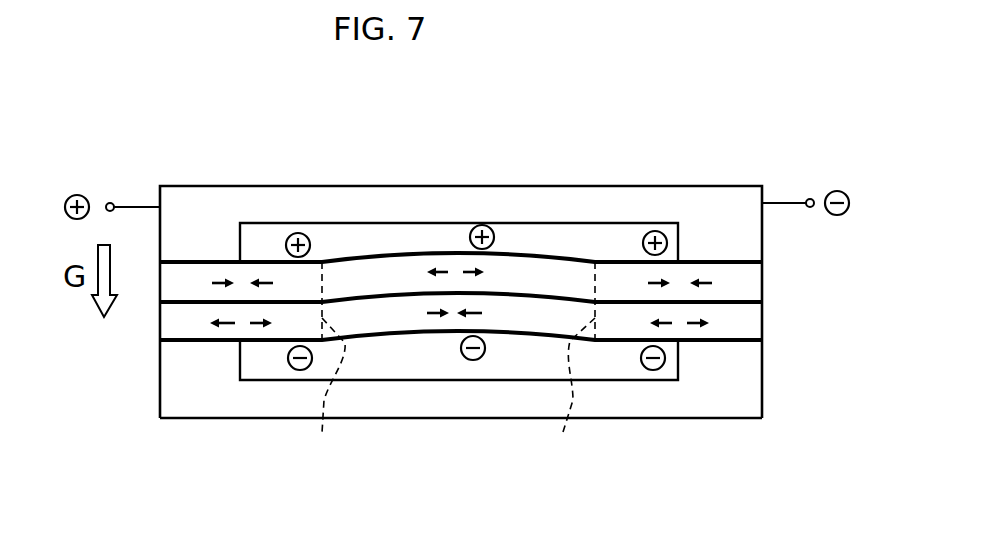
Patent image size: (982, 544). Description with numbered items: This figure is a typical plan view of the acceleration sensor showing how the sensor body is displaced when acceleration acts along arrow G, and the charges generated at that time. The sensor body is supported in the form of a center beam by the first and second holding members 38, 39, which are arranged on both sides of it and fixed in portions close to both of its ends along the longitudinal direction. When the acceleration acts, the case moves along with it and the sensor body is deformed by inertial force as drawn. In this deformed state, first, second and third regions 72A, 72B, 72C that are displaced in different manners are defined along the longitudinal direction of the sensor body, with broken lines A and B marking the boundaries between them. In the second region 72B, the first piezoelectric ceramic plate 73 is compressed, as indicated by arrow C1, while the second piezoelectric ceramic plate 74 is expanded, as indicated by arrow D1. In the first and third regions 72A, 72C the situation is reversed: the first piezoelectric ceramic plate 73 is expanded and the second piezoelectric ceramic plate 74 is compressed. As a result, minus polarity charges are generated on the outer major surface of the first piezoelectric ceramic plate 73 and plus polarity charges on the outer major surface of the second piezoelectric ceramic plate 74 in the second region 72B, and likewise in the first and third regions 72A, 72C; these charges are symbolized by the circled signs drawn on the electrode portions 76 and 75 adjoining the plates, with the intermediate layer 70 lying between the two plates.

The first holding member 38 is at (240, 185).
The second holding member 39 is at (495, 420).
The intermediate layer 70 is at (353, 298).
The second piezoelectric ceramic plate 74 is at (407, 270).
The first piezoelectric ceramic plate 73 is at (393, 320).
The upper electrode 76 is at (582, 258).
The lower electrode 75 is at (605, 342).
The first region 72A is at (287, 325).
The second region 72B is at (525, 308).
The third region 72C is at (626, 275).
The arrow D1 is at (463, 271).
The arrow C1 is at (440, 318).
The broken line A is at (332, 394).
The broken line B is at (571, 396).